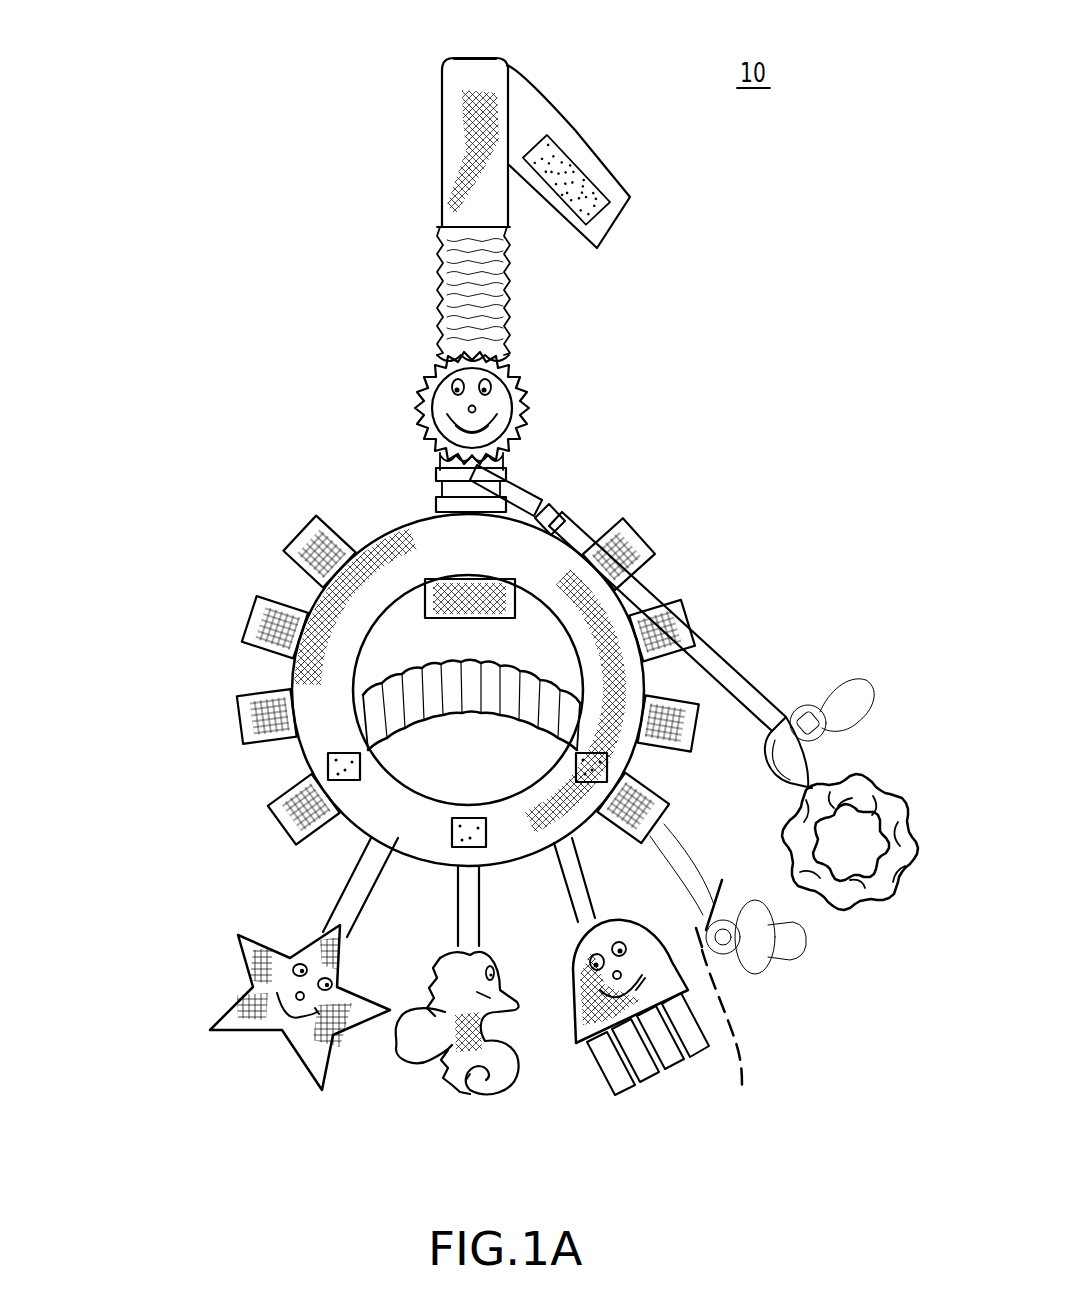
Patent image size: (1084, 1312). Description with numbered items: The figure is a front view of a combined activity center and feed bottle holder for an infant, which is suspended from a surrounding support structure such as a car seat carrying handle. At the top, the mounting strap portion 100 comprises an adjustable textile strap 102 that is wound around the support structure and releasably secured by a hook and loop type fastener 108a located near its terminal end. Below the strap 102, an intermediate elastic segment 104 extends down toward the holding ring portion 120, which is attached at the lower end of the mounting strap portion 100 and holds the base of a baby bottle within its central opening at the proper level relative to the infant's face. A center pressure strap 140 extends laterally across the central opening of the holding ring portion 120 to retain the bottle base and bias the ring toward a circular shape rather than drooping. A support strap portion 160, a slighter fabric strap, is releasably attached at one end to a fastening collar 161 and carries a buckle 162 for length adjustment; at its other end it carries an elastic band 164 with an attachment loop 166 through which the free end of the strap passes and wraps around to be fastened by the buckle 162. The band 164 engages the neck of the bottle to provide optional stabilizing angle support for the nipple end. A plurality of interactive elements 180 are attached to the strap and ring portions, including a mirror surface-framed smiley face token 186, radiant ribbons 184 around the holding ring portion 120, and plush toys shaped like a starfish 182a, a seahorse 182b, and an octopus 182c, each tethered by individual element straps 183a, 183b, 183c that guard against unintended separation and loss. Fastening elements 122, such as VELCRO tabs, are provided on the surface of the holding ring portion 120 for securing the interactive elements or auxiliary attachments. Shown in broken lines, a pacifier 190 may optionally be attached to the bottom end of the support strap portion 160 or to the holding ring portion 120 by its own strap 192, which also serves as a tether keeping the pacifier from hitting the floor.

The mounting strap portion 100 is at (443, 165).
The adjustable textile strap 102 is at (446, 84).
The intermediate elastic segment 104 is at (505, 282).
The hook and loop type fastener 108a is at (578, 185).
The holding ring portion 120 is at (383, 547).
The fastening elements 122 is at (470, 818).
The center pressure strap 140 is at (375, 712).
The support strap portion 160 is at (650, 600).
The fastening collar 161 is at (436, 471).
The buckle 162 is at (557, 507).
The band 164 is at (890, 786).
The attachment loop 166 is at (797, 787).
The interactive elements 180 is at (240, 1079).
The starfish plush toy 182a is at (317, 1080).
The seahorse plush toy 182b is at (468, 1095).
The octopus plush toy 182c is at (585, 1043).
The element strap 183a is at (356, 892).
The element strap 183b is at (455, 918).
The element strap 183c is at (578, 905).
The radiant ribbons 184 is at (255, 607).
The mirror surface-framed smiley face token 186 is at (515, 405).
The pacifier 190 is at (843, 677).
The pacifier strap 192 is at (703, 973).